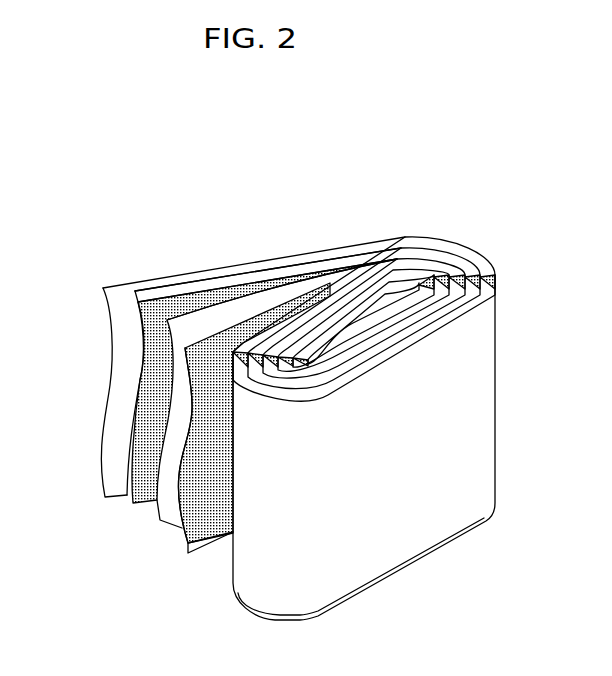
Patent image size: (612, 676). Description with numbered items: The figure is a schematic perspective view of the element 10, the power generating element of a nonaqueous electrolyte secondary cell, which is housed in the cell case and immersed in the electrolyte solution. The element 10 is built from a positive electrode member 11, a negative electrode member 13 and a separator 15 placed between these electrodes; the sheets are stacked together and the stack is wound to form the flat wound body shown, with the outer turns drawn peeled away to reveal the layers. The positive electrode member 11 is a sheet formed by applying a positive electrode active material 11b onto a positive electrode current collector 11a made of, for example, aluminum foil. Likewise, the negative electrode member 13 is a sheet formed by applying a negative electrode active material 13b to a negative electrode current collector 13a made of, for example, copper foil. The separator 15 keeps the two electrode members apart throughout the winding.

The element 10 is at (467, 171).
The positive electrode member 11 is at (201, 451).
The positive electrode current collector 11a is at (214, 540).
The positive electrode active material 11b is at (187, 543).
The negative electrode member 13 is at (209, 363).
The negative electrode current collector 13a is at (177, 287).
The negative electrode active material 13b is at (223, 283).
The separator 15 is at (182, 360).